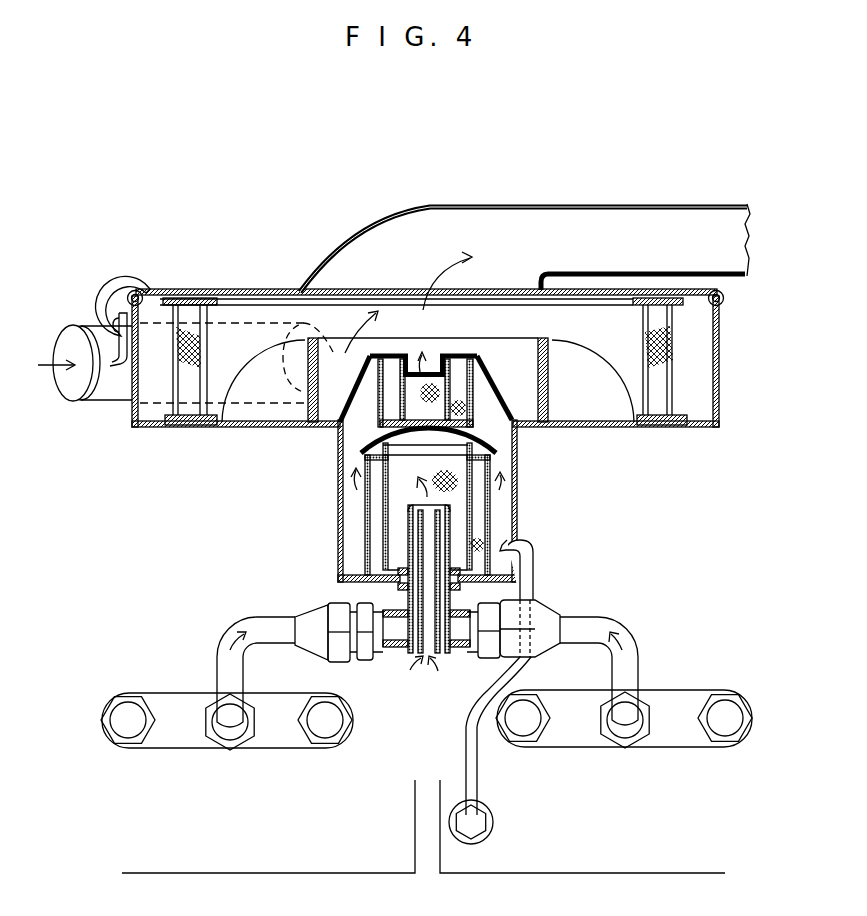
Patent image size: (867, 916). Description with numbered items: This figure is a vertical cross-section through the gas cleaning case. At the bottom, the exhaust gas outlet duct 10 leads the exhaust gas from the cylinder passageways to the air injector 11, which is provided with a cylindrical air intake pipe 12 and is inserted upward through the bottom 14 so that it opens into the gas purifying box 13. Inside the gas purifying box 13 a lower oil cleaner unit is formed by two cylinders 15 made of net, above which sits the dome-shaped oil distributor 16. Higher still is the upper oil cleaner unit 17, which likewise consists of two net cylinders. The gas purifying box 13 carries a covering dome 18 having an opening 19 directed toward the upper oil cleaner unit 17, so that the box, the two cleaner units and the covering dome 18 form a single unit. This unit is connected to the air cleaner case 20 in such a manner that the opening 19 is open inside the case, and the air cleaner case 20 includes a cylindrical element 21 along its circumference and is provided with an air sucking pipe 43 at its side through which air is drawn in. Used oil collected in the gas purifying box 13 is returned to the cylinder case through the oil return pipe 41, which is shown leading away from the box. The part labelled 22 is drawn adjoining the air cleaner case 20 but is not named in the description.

The exhaust gas outlet duct 10 is at (632, 636).
The air injector 11 is at (407, 522).
The cylindrical air intake pipe 12 is at (419, 546).
The gas purifying box 13 is at (337, 472).
The bottom 14 is at (378, 578).
The cylinders made of net 15 is at (382, 516).
The dome-shaped oil distributor 16 is at (470, 403).
The upper oil cleaner unit 17 is at (449, 392).
The covering dome 18 is at (346, 400).
The opening 19 is at (372, 400).
The air cleaner case 20 is at (620, 426).
The cylindrical element 21 is at (188, 330).
The cover 22 is at (586, 205).
The oil return pipe 41 is at (534, 598).
The air sucking pipe 43 is at (102, 398).